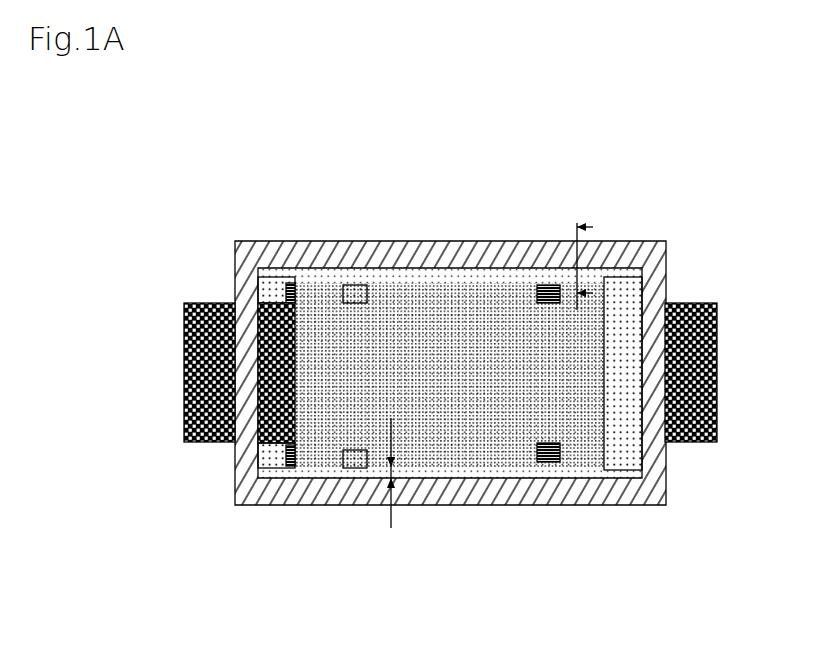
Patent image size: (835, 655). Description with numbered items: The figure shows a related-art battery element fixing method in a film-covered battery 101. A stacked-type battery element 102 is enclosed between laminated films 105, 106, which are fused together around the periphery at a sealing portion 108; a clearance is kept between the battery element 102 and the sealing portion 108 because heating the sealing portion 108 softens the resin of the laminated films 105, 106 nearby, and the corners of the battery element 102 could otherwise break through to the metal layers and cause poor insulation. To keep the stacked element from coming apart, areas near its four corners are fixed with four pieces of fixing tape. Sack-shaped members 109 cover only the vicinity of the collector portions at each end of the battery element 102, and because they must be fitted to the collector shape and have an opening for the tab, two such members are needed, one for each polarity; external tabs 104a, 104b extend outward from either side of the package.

The piezoelectric device 101 is at (208, 565).
The battery element 102 is at (401, 320).
The external electrode 104a is at (717, 357).
The external electrode 104b is at (183, 383).
The laminated film 105 is at (476, 252).
The laminated film 106 is at (450, 373).
The sealing portion 108 is at (339, 252).
The sack-shaped member 109 is at (267, 300).